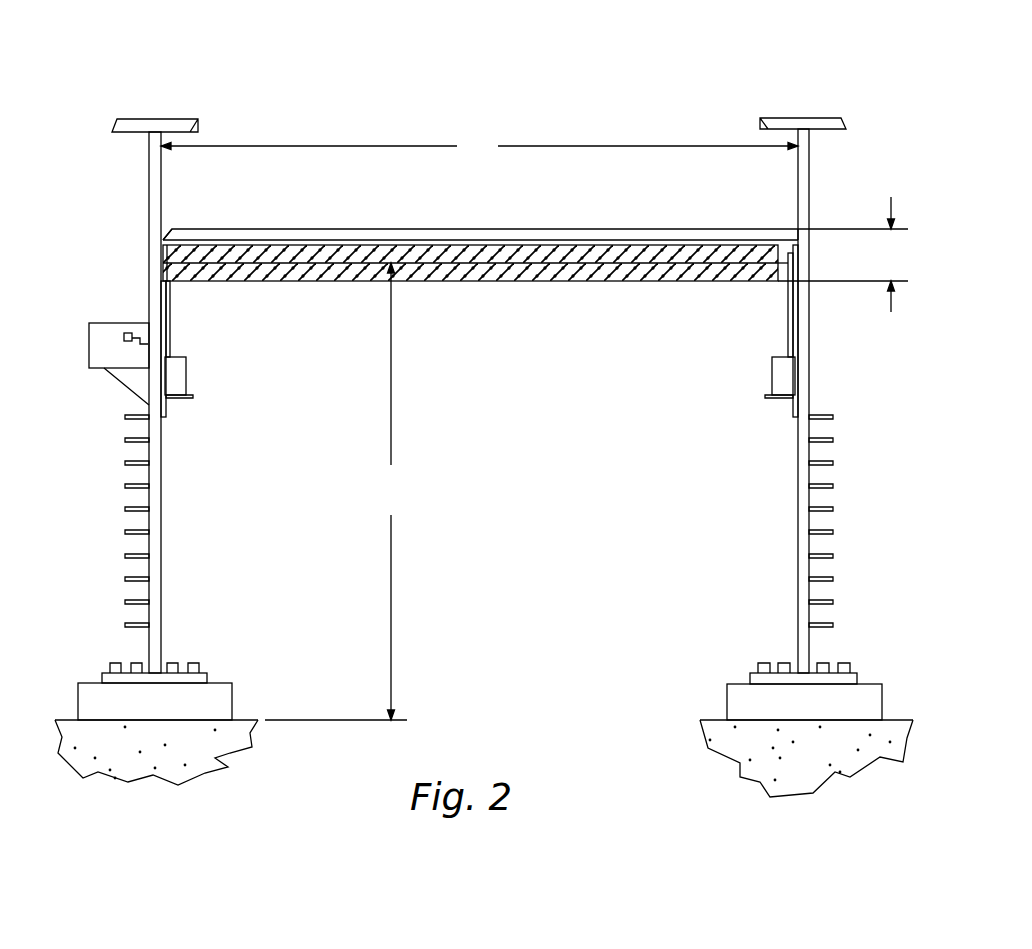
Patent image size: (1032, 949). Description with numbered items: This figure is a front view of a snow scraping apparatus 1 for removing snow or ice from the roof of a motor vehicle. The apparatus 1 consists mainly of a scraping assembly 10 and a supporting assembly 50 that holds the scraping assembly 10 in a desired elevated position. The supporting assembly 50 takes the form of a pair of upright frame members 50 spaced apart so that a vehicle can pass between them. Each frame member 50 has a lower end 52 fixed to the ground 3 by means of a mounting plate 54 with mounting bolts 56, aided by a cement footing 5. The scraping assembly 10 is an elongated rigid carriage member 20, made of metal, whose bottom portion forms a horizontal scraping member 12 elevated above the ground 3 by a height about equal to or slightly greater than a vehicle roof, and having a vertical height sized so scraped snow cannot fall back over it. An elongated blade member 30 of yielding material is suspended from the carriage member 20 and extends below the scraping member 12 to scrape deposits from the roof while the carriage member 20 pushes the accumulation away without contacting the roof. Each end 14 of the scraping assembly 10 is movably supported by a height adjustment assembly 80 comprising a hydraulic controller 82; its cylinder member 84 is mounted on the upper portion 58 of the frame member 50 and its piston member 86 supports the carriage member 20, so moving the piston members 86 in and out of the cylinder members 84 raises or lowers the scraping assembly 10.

The snow scraping apparatus 1 is at (807, 103).
The ground 3 is at (220, 737).
The cement footing 5 is at (90, 702).
The scraping assembly 10 is at (343, 243).
The scraping member 12 is at (650, 265).
The end of the scraping assembly 14 is at (162, 240).
The carriage member 20 is at (530, 235).
The blade member 30 is at (513, 267).
The supporting assembly 50 is at (177, 520).
The lower end 52 is at (155, 613).
The mounting plate 54 is at (220, 670).
The mounting bolt 56 is at (110, 662).
The upper portion 58 is at (157, 205).
The height adjustment assembly 80 is at (205, 357).
The hydraulic controller 82 is at (177, 379).
The cylinder member 84 is at (187, 367).
The piston member 86 is at (170, 333).